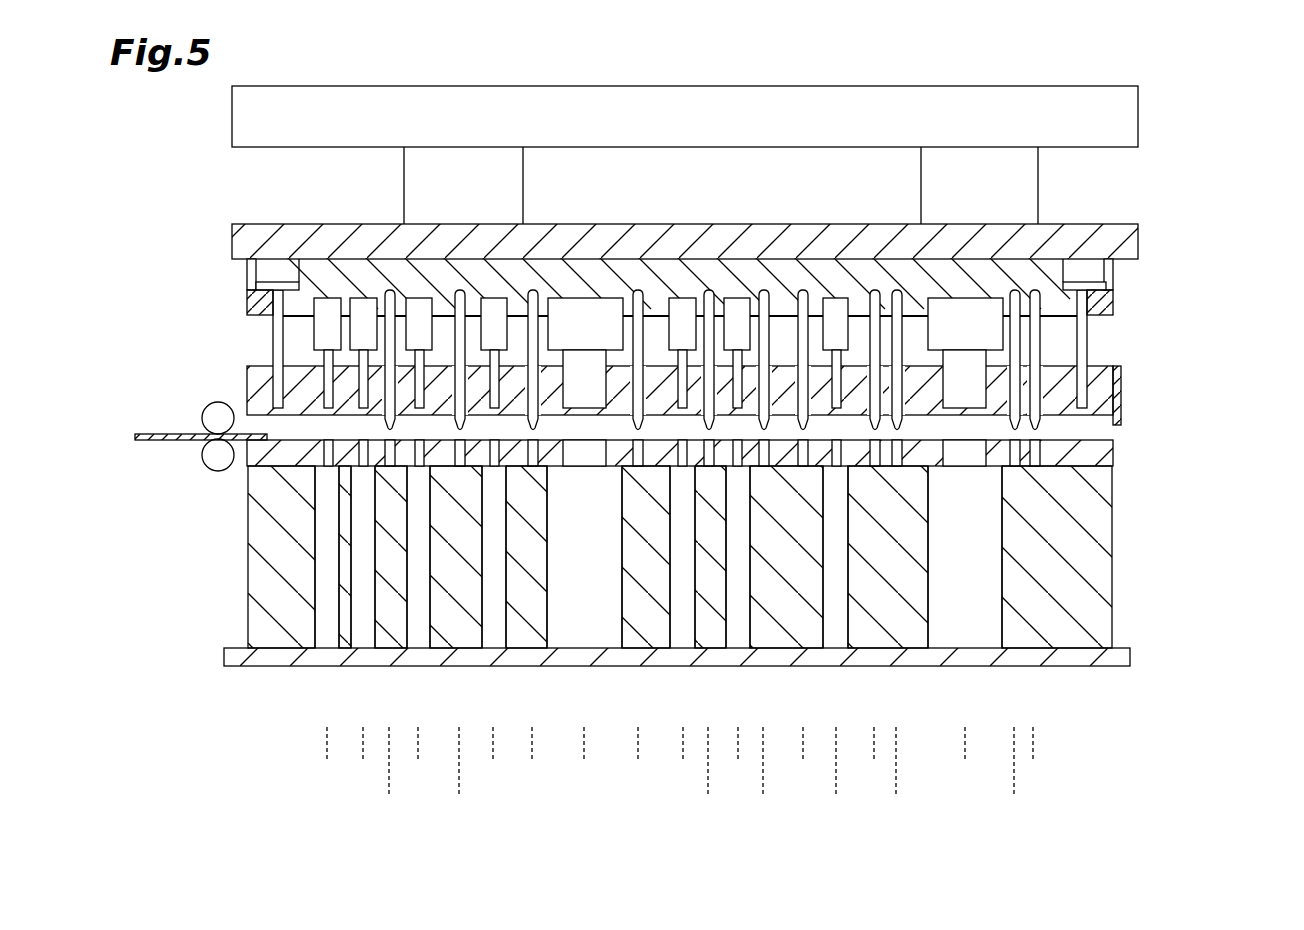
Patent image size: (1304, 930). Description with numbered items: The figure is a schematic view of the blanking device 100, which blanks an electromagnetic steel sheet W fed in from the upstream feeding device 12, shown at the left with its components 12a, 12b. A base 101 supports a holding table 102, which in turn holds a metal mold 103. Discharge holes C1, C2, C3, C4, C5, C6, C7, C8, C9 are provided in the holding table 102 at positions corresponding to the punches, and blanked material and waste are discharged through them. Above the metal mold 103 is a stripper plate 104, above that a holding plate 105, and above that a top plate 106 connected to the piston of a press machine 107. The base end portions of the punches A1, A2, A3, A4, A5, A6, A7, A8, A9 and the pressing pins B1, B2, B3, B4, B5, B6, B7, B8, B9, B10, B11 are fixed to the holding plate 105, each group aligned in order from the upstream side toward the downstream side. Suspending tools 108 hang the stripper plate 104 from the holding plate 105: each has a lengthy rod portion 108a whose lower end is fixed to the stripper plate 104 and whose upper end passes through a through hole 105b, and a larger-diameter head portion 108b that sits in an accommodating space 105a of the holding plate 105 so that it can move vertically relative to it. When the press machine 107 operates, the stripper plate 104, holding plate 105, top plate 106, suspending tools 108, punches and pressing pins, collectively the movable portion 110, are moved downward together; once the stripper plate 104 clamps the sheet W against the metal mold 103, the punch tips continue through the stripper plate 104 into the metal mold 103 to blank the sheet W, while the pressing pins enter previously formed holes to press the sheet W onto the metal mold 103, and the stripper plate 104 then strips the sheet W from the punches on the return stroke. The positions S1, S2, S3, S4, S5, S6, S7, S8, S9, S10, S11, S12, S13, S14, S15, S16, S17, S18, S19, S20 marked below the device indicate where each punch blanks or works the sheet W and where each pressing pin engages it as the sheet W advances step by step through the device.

The blanking device 100 is at (203, 129).
The press machine 107 is at (1140, 116).
The top plate 106 is at (1140, 240).
The holding plate 105 is at (1113, 319).
The accommodating space 105a is at (270, 278).
The through hole 105b is at (272, 312).
The suspending tool 108 is at (673, 328).
The rod portion 108a is at (271, 336).
The head portion 108b is at (262, 286).
The stripper plate 104 is at (1113, 358).
The metal mold 103 is at (1113, 435).
The holding table 102 is at (1115, 573).
The base 101 is at (1132, 656).
The movable portion 110 is at (1243, 223).
The feeding device 12 is at (174, 397).
The upper conveying roller 12a is at (202, 411).
The lower conveying roller 12b is at (218, 472).
The electromagnetic steel sheet W is at (156, 442).
The punch A1 is at (328, 297).
The punch A2 is at (363, 297).
The punch A3 is at (419, 297).
The punch A4 is at (494, 297).
The punch A5 is at (585, 297).
The punch A6 is at (682, 297).
The punch A7 is at (737, 297).
The punch A8 is at (835, 297).
The punch A9 is at (965, 297).
The pressing pin B1 is at (390, 289).
The pressing pin B2 is at (460, 289).
The pressing pin B3 is at (533, 289).
The pressing pin B4 is at (638, 289).
The pressing pin B5 is at (709, 289).
The pressing pin B6 is at (764, 289).
The pressing pin B7 is at (803, 289).
The pressing pin B8 is at (875, 289).
The pressing pin B9 is at (897, 289).
The pressing pin B10 is at (1015, 289).
The pressing pin B11 is at (1035, 289).
The discharge hole C1 is at (317, 629).
The discharge hole C2 is at (353, 629).
The discharge hole C3 is at (409, 629).
The discharge hole C4 is at (484, 629).
The discharge hole C5 is at (549, 629).
The discharge hole C6 is at (672, 629).
The discharge hole C7 is at (728, 629).
The discharge hole C8 is at (825, 629).
The discharge hole C9 is at (930, 629).
The position S1 is at (328, 757).
The position S2 is at (362, 757).
The position S3 is at (389, 775).
The position S4 is at (418, 757).
The position S5 is at (493, 757).
The position S6 is at (532, 757).
The position S7 is at (460, 775).
The position S8 is at (584, 757).
The position S9 is at (638, 757).
The position S10 is at (683, 757).
The position S11 is at (708, 775).
The position S12 is at (738, 757).
The position S13 is at (765, 775).
The position S14 is at (805, 757).
The position S15 is at (835, 775).
The position S16 is at (870, 757).
The position S17 is at (897, 775).
The position S18 is at (965, 757).
The position S19 is at (1015, 775).
The position S20 is at (1040, 757).